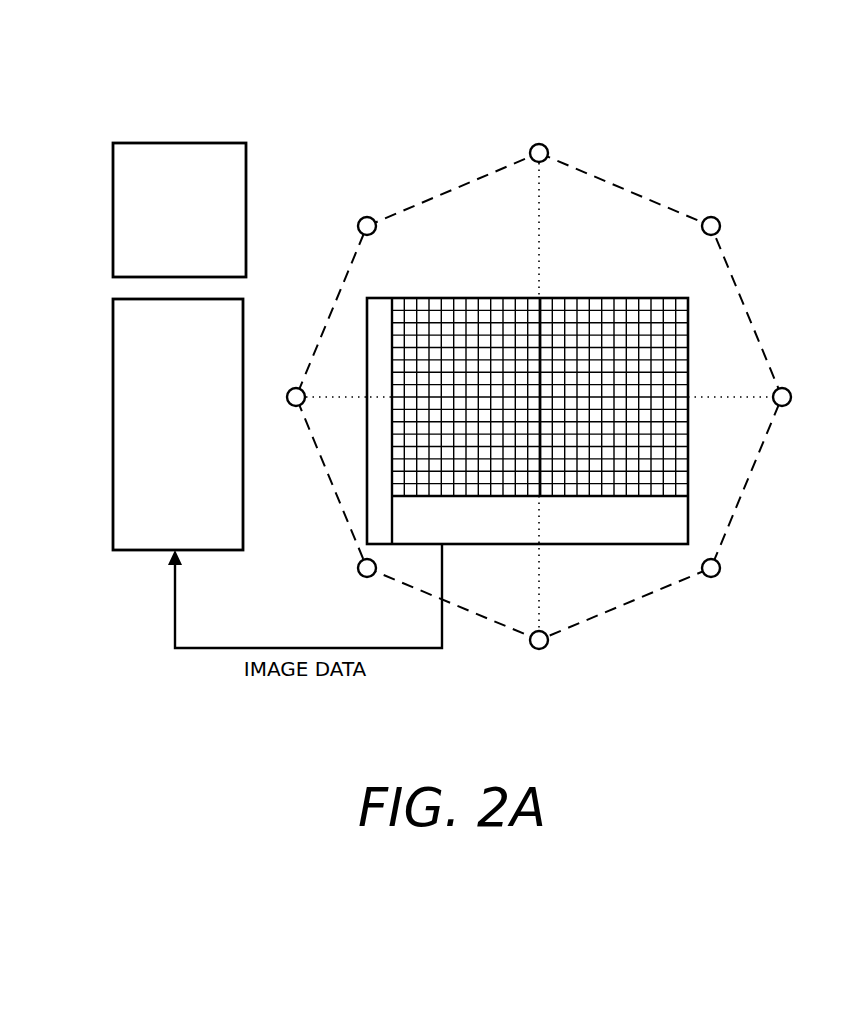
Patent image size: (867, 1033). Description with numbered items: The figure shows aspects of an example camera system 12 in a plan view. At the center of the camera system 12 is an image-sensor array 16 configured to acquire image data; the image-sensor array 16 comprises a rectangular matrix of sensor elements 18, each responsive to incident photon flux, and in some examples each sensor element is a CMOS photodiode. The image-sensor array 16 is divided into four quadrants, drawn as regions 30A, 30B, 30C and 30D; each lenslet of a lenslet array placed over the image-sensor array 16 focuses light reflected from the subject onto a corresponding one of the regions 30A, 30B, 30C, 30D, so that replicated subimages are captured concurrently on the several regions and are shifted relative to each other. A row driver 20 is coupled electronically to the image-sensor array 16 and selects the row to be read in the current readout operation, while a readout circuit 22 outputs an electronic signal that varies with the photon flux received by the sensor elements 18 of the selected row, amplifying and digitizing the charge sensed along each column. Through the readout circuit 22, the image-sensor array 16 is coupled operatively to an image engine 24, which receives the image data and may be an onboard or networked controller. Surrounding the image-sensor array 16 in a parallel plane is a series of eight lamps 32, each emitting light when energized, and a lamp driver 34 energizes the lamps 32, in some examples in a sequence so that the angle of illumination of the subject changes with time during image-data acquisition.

The camera system 12 is at (373, 119).
The image-sensor array 16 is at (557, 279).
The sensor elements 18 is at (498, 302).
The row driver 20 is at (367, 340).
The readout circuit 22 is at (540, 520).
The image engine 24 is at (178, 424).
The region 30A is at (466, 347).
The region 30B is at (614, 347).
The region 30C is at (466, 446).
The region 30D is at (614, 446).
The lamps 32 is at (722, 218).
The lamp driver 34 is at (179, 210).